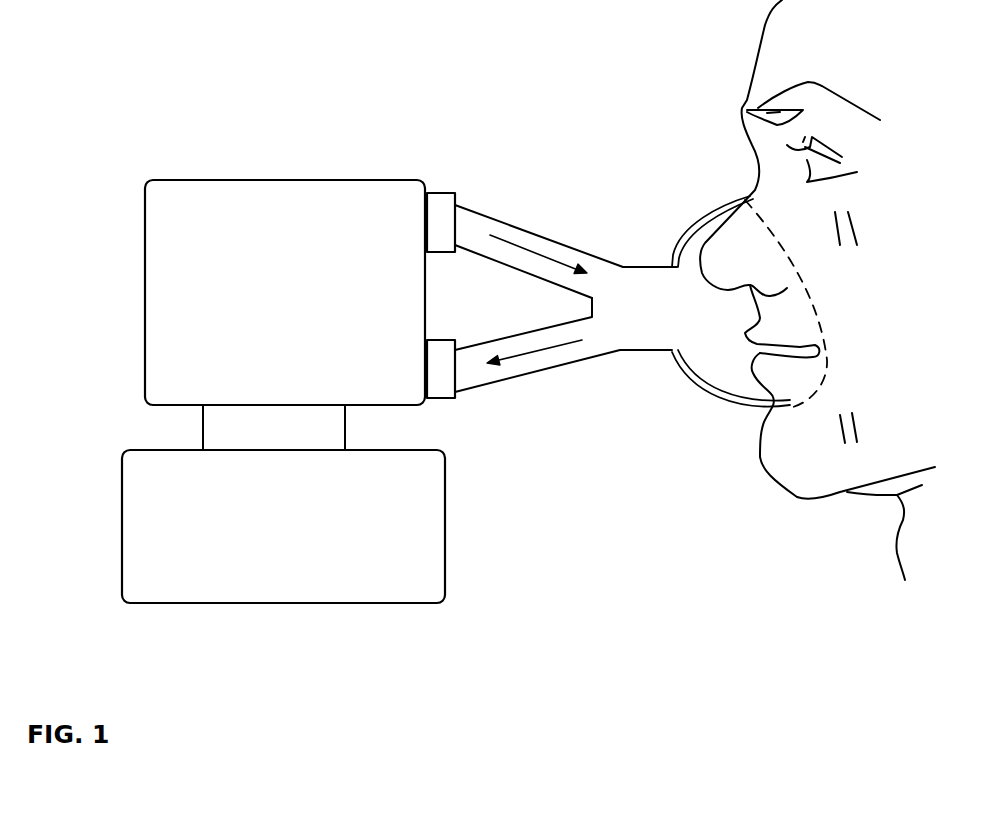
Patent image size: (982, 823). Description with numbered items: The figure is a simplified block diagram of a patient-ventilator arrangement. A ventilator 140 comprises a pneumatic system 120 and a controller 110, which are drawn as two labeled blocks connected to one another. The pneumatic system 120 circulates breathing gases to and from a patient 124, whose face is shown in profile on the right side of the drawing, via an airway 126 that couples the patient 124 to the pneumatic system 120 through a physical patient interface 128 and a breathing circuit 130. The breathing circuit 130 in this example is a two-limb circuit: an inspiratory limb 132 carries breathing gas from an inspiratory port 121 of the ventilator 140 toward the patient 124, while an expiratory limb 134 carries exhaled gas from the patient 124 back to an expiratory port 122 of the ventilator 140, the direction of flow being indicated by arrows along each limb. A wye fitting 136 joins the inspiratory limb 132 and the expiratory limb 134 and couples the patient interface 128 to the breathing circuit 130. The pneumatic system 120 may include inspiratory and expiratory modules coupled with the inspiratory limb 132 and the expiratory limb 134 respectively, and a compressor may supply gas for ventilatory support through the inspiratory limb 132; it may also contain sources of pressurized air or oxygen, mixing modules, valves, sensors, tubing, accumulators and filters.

The controller 110 is at (283, 504).
The pneumatic system 120 is at (285, 292).
The inspiratory port 121 is at (457, 190).
The expiratory port 122 is at (455, 402).
The patient 124 is at (753, 72).
The airway 126 is at (648, 190).
The patient interface 128 is at (693, 220).
The breathing circuit 130 is at (573, 232).
The inspiratory limb 132 is at (478, 253).
The expiratory limb 134 is at (517, 377).
The wye fitting 136 is at (588, 302).
The ventilator 140 is at (373, 319).